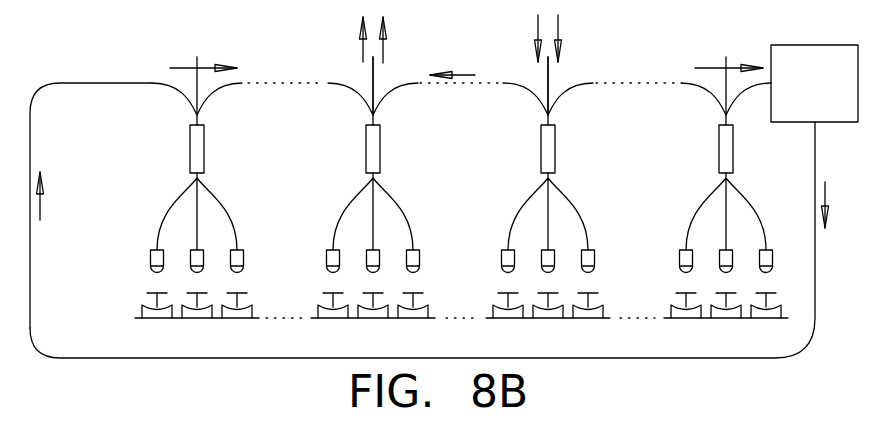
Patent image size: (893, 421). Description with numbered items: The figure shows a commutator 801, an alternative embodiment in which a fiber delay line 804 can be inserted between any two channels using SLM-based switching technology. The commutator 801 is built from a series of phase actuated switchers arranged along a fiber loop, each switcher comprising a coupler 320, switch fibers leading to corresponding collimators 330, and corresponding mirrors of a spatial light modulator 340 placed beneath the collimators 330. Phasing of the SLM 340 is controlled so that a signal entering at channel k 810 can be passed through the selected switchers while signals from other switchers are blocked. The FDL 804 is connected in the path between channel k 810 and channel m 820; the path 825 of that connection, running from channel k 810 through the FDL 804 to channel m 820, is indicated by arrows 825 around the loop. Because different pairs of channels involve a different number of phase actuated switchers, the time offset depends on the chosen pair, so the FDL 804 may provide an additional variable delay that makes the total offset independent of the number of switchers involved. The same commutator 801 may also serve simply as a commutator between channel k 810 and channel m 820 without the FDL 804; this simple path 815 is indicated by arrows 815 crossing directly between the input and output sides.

The commutator 801 is at (130, 45).
The fiber delay line (FDL) 804 is at (823, 45).
The channel k 810 is at (547, 80).
The simple path 815 is at (535, 35).
The channel m 820 is at (378, 82).
The path 825 is at (185, 88).
The fiber coupler 320 is at (165, 158).
The fiber collimators 330 is at (138, 268).
The spatial light modulator (SLM) 340 is at (215, 320).